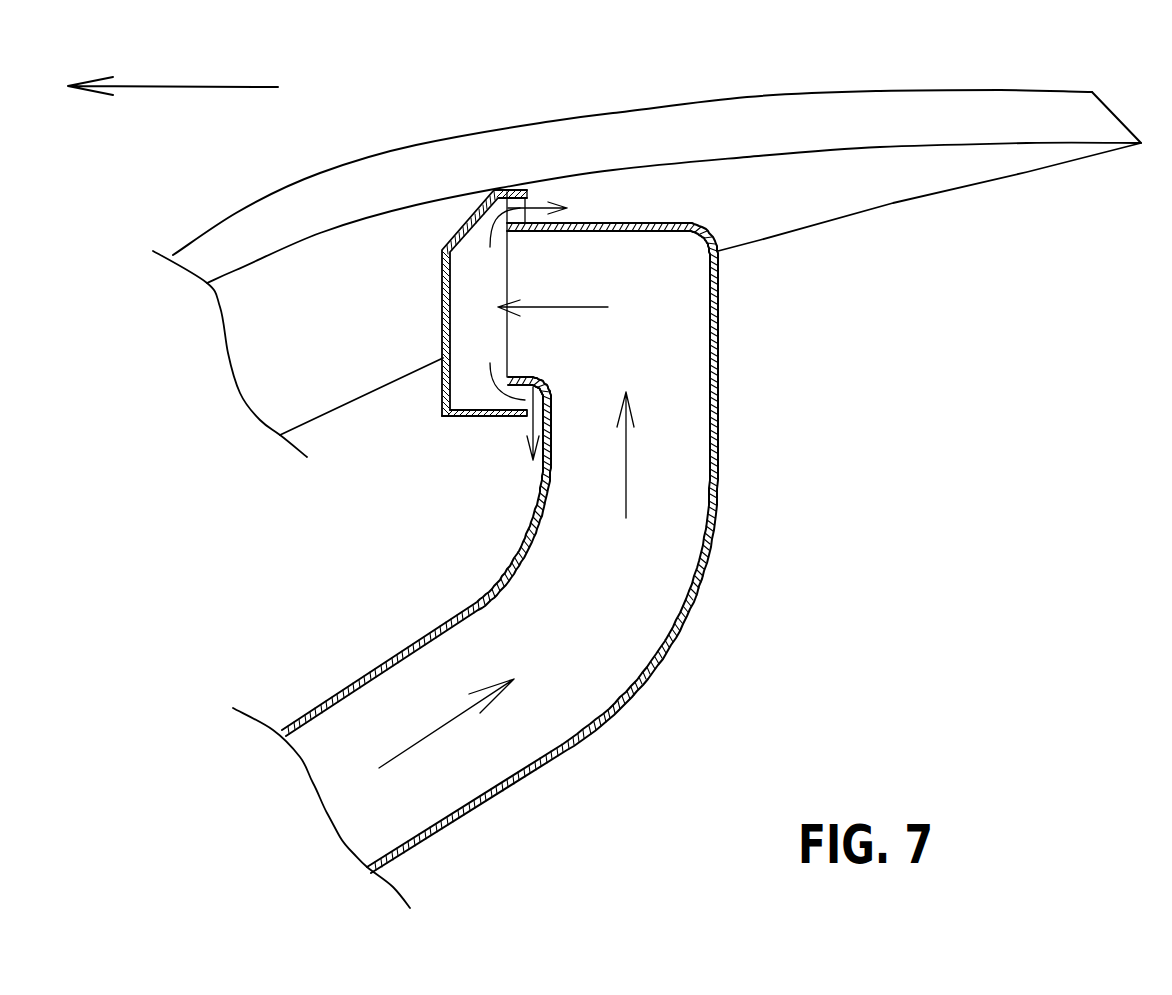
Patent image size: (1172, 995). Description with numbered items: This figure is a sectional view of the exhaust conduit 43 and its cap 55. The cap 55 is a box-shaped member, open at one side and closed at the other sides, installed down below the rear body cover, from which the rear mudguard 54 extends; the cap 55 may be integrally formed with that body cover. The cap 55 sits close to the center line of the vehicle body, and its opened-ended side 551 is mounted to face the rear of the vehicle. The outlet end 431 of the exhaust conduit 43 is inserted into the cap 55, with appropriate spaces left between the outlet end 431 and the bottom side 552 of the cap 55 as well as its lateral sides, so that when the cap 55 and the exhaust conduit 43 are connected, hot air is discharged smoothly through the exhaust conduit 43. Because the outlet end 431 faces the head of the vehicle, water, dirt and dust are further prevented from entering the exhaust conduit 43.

The exhaust conduit 43 is at (565, 746).
The outlet end 431 is at (507, 318).
The rear mudguard 54 is at (758, 98).
The cap 55 is at (462, 228).
The opened-ended side 551 is at (527, 193).
The bottom side 552 is at (473, 417).